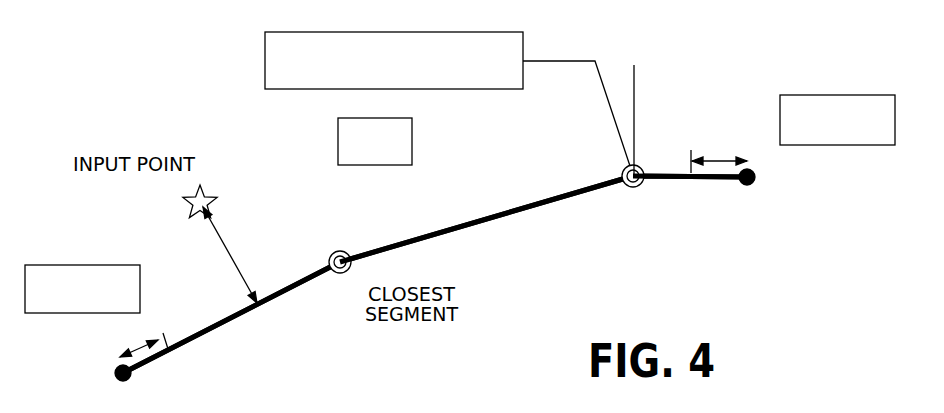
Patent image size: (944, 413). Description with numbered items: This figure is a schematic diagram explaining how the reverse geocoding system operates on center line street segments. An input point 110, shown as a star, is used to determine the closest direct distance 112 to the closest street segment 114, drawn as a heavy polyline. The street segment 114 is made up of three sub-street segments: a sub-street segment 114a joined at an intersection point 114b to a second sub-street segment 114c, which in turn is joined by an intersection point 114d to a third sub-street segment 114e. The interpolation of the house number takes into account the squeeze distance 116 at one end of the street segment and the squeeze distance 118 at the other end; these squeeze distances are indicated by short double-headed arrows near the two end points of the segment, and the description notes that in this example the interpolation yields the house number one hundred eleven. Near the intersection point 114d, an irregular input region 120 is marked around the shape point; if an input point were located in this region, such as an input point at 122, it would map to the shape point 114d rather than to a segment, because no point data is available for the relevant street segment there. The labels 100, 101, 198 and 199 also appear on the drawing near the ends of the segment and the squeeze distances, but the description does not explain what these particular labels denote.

The start point of shape 100 is at (167, 367).
The squeeze distance 101 is at (178, 332).
The input point 110 is at (187, 200).
The closest direct distance 112 is at (307, 210).
The closest street segment 114 is at (288, 300).
The sub-street segment 114a is at (297, 283).
The intersection point 114b is at (344, 251).
The second sub-street segment 114c is at (460, 219).
The intersection point 114d is at (621, 172).
The third sub-street segment 114e is at (709, 181).
The squeeze distance 116 is at (106, 311).
The squeeze distance 118 is at (793, 130).
The region 120 is at (628, 87).
The input point 122 is at (618, 104).
The segment portion 198 is at (668, 207).
The squeeze boundary tick 199 is at (671, 158).